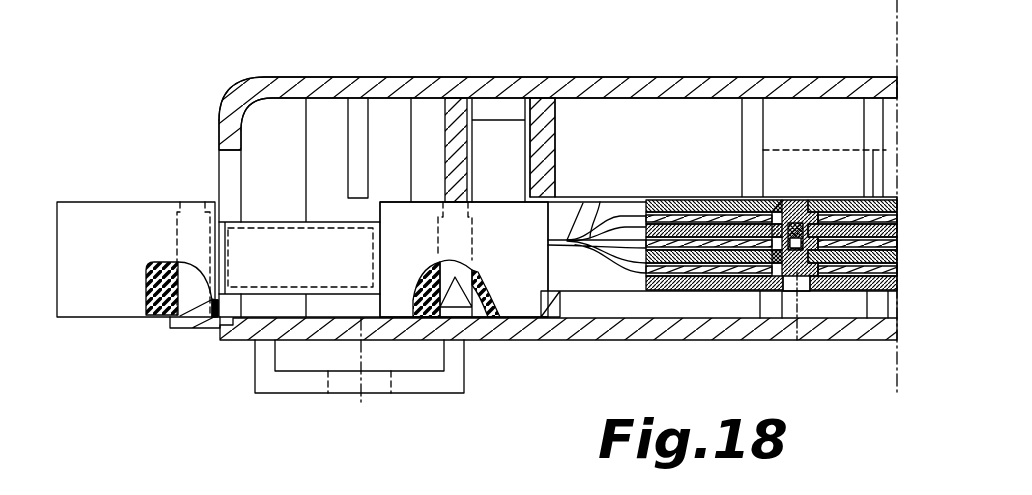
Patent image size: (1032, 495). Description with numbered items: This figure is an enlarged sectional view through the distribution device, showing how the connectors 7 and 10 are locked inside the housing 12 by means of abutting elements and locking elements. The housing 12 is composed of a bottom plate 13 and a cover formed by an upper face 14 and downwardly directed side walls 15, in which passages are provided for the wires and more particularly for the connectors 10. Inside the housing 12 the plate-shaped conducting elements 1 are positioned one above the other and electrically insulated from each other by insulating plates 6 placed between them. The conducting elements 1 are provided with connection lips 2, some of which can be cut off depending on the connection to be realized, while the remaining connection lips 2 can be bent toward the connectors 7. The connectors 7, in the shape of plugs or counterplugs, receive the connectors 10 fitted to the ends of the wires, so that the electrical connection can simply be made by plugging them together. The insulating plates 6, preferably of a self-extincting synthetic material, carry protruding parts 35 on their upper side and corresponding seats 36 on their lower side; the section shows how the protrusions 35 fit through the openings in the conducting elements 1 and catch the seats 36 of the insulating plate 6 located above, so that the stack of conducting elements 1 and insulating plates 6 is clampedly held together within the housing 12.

The conducting element 1 is at (898, 219).
The connection lip 2 is at (612, 216).
The insulating plate 6 is at (898, 205).
The connector 7 is at (521, 300).
The connector 10 is at (90, 220).
The housing 12 is at (208, 76).
The bottom plate 13 is at (683, 330).
The upper face 14 is at (597, 80).
The side wall 15 is at (219, 135).
The protruding part 35 is at (800, 199).
The seat 36 is at (803, 282).